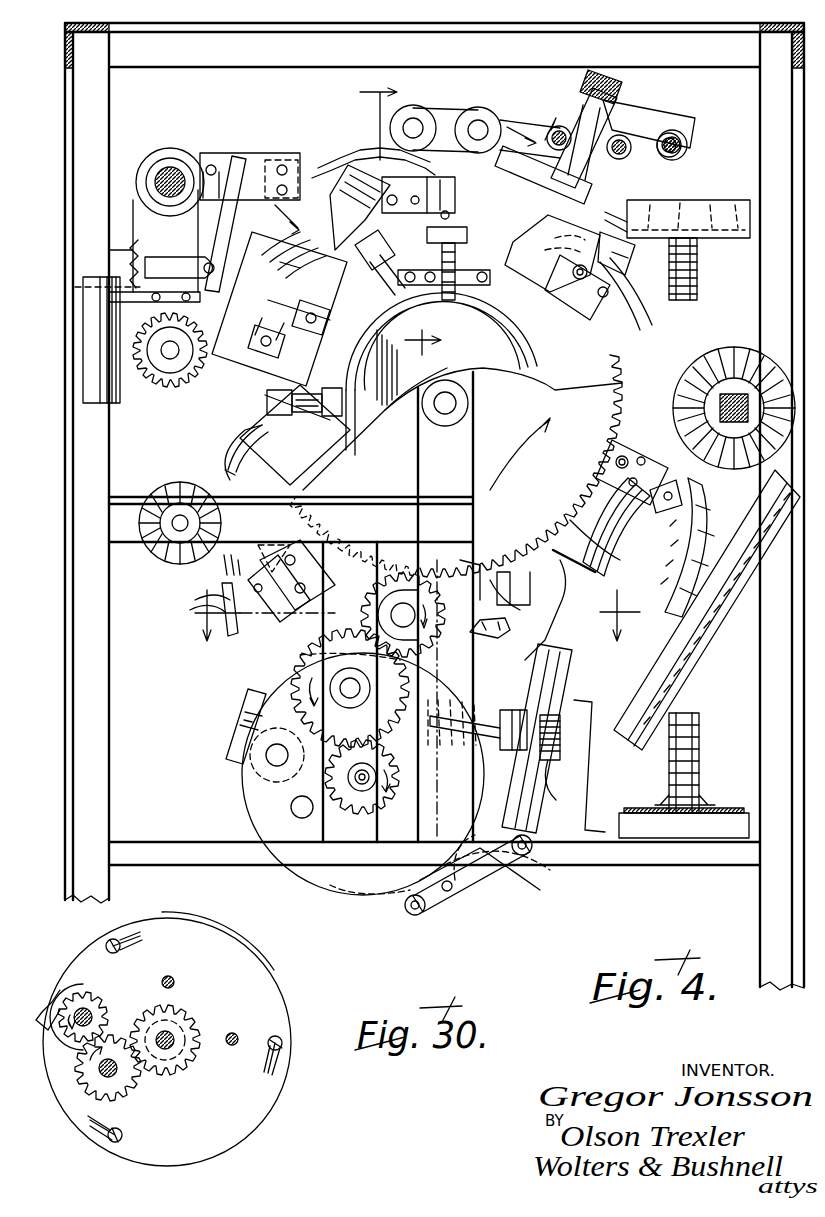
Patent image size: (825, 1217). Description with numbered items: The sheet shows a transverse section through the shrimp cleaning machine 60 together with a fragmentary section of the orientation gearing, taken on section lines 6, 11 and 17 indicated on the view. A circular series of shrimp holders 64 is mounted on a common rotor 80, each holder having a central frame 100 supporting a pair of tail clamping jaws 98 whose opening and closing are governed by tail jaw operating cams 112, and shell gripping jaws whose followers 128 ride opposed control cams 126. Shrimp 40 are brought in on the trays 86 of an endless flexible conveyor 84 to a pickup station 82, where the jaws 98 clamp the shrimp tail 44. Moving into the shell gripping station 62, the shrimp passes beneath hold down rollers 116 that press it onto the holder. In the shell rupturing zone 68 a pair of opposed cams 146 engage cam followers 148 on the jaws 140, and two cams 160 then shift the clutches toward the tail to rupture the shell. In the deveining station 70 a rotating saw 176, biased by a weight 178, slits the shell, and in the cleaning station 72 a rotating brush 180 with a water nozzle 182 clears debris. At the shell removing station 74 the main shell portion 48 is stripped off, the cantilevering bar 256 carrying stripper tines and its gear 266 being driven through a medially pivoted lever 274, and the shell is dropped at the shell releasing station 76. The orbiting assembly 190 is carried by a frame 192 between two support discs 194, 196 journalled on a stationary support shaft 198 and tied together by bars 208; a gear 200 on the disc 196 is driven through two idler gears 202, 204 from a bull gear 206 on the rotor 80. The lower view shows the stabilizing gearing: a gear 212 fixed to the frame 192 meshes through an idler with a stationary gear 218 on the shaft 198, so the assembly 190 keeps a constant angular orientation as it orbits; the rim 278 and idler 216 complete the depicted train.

In FIG. 4, the machine 60 is at (54, 58).
In FIG. 4, the rotating brush 180 is at (170, 160).
In FIG. 4, the shell rupturing zone 68 is at (306, 163).
In FIG. 4, the deveining station 70 is at (208, 404).
In FIG. 4, the rotating saw 176 is at (165, 392).
In FIG. 4, the weight 178 is at (100, 403).
In FIG. 4, the opposed cams 146 is at (279, 309).
In FIG. 4, the section line 11 is at (403, 165).
In FIG. 4, the hold down rollers 116 is at (412, 118).
In FIG. 4, the shell gripping station 62 is at (467, 125).
In FIG. 4, the shrimp holder 64 is at (555, 183).
In FIG. 4, the trays 86 is at (735, 200).
In FIG. 4, the pickup station 82 is at (628, 205).
In FIG. 4, the endless flexible conveyor 84 is at (737, 252).
In FIG. 4, the shrimp tail 44 is at (570, 267).
In FIG. 4, the tail clamping jaws 98 is at (530, 230).
In FIG. 4, the shrimp 40 is at (702, 200).
In FIG. 4, the jaws 140 is at (255, 392).
In FIG. 4, the cams 160 is at (350, 200).
In FIG. 4, the section line 6 is at (389, 221).
In FIG. 4, the tail jaw operating cams 112 is at (520, 342).
In FIG. 4, the control cams 126 is at (460, 335).
In FIG. 4, the followers 128 is at (540, 372).
In FIG. 4, the central frame 100 is at (456, 482).
In FIG. 4, the cam followers 148 is at (615, 458).
In FIG. 4, the main shell portion 48 is at (680, 562).
In FIG. 4, the section line 17 is at (417, 612).
In FIG. 4, the cleaning station 72 is at (192, 590).
In FIG. 4, the nozzle 182 is at (190, 600).
In FIG. 4, the idler gear 202 is at (305, 660).
In FIG. 4, the gear 200 is at (405, 775).
In FIG. 4, the idler gear 204 is at (418, 640).
In FIG. 4, the assembly 190 is at (234, 767).
In FIG. 4, the support disc 196 is at (340, 885).
In FIG. 4, the stationary support shaft 198 is at (362, 790).
In FIG. 30, the stationary support shaft 198 is at (178, 1050).
In FIG. 4, the shell removing station 74 is at (488, 677).
In FIG. 4, the rotor 80 is at (500, 582).
In FIG. 4, the bull gear 206 is at (615, 590).
In FIG. 4, the cantilevering bar 256 is at (495, 720).
In FIG. 4, the gear 266 is at (560, 796).
In FIG. 4, the medially pivoted lever 274 is at (505, 880).
In FIG. 4, the gear 212 is at (530, 862).
In FIG. 30, the gear 212 is at (65, 1048).
In FIG. 4, the shell releasing station 76 is at (635, 610).
In FIG. 30, the support disc 194 is at (205, 1148).
In FIG. 30, the rim 278 is at (258, 940).
In FIG. 30, the frame 192 is at (40, 1000).
In FIG. 30, the stationary gear 218 is at (185, 1012).
In FIG. 30, the gear 216 is at (122, 1086).
In FIG. 30, the bars 208 is at (172, 975).